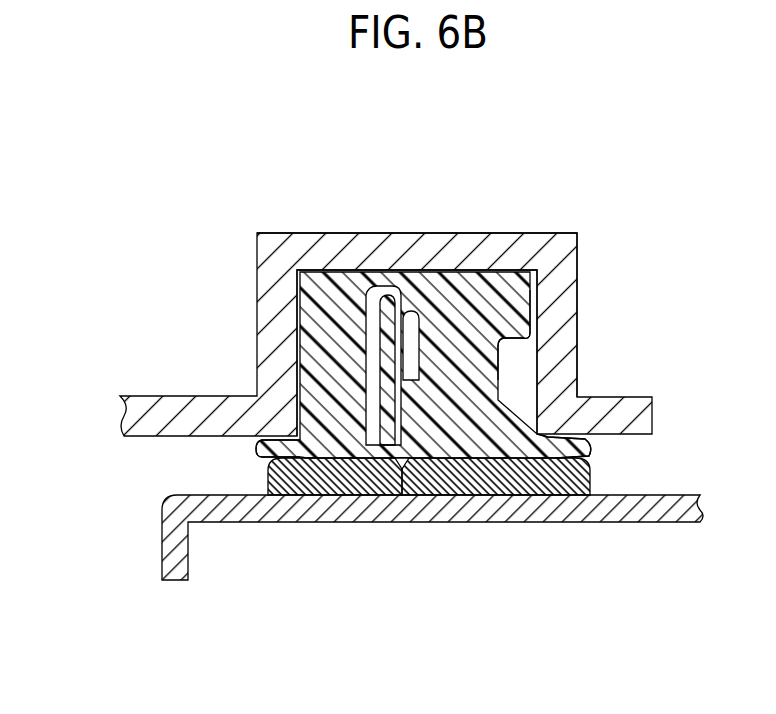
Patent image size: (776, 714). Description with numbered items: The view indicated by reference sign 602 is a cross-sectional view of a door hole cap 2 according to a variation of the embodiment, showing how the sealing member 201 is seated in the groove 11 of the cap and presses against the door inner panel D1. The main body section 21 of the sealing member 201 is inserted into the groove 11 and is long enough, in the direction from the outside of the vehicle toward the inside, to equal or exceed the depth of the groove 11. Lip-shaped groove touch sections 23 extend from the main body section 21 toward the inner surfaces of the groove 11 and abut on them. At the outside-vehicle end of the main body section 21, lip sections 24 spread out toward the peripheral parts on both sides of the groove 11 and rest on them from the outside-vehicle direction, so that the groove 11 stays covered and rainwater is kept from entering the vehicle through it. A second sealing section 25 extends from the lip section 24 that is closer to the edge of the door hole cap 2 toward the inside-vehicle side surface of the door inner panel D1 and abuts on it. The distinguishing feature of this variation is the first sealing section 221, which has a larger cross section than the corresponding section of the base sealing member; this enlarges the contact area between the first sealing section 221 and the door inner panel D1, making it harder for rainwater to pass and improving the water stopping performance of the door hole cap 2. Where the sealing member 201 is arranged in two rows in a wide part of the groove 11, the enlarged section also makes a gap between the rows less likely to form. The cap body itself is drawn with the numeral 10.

The cross-sectional view 602 is at (140, 161).
The housing 10 is at (168, 410).
The groove 11 is at (318, 233).
The sealing member 201 is at (464, 300).
The main body section 21 is at (303, 292).
The groove touch section 23 is at (522, 297).
The lip section 24 is at (282, 447).
The second sealing section 25 is at (568, 472).
The door hole cap 2 is at (667, 392).
The first sealing section 221 is at (333, 487).
The door inner panel D1 is at (242, 522).